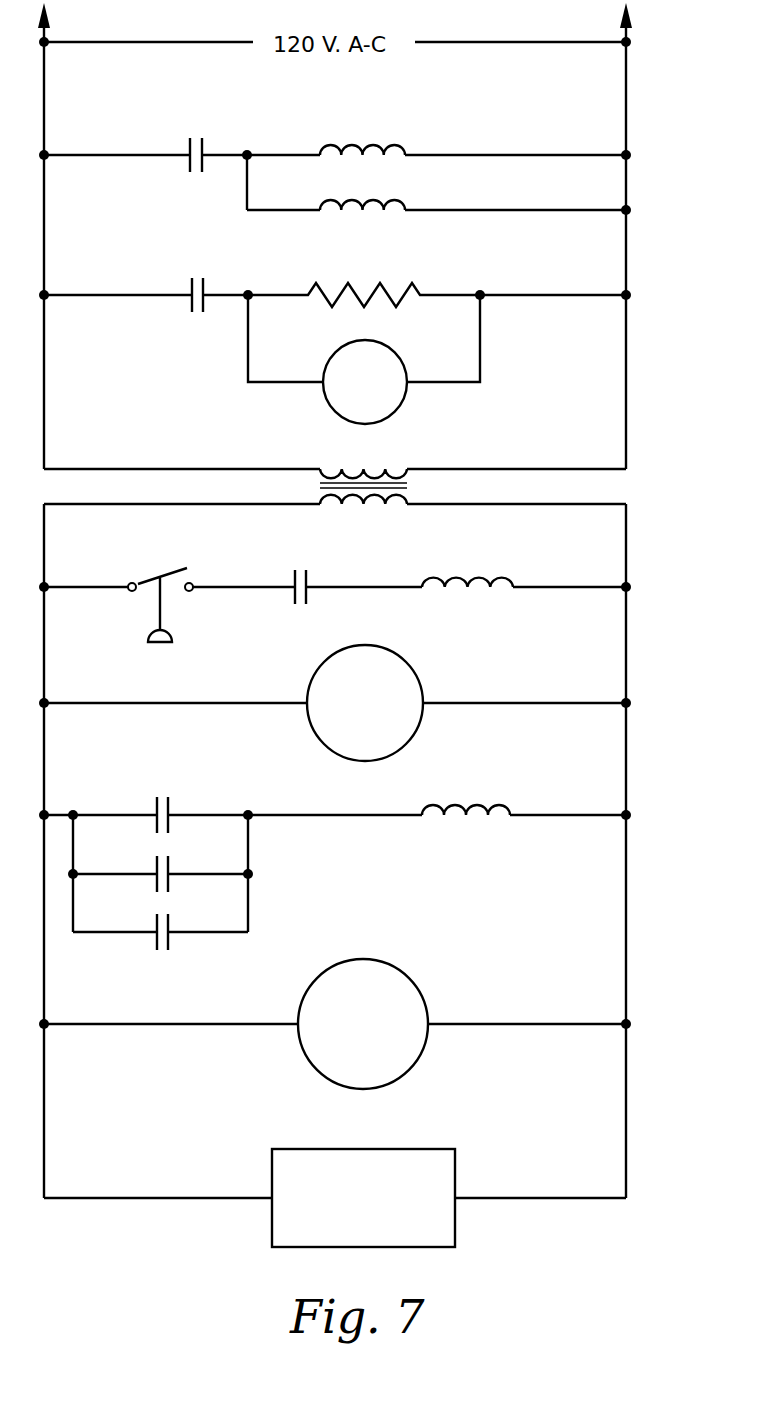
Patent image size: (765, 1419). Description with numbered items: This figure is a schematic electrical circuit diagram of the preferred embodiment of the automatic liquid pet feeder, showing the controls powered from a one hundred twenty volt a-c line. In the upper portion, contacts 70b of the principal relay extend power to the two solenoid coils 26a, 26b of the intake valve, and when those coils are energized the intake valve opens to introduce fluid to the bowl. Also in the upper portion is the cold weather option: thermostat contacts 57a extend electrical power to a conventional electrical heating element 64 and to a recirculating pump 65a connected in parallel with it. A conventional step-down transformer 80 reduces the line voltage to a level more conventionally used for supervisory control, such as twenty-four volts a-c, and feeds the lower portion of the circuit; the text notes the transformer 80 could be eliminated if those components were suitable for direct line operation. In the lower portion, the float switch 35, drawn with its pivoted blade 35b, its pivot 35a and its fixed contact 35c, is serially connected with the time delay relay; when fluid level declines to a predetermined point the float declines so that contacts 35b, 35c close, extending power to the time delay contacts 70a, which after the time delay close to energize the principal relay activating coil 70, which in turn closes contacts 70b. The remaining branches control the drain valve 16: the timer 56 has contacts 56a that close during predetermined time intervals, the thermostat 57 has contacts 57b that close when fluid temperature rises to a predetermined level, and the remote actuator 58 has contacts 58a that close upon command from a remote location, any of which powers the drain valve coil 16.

The drain valve 16 is at (506, 816).
The solenoid coil 26a is at (400, 154).
The solenoid coil 26b is at (400, 209).
The float switch 35 is at (151, 603).
The float switch element 35a is at (174, 634).
The float switch contact 35b is at (162, 571).
The float switch contact 35c is at (191, 593).
The timer 56 is at (420, 676).
The timer contacts 56a is at (162, 796).
The thermostat 57 is at (424, 992).
The thermostat contacts 57a is at (196, 277).
The thermostat contacts 57b is at (163, 866).
The remote actuator 58 is at (421, 1148).
The remote actuator contacts 58a is at (162, 924).
The electrical heating element 64 is at (373, 293).
The recirculating pump 65a is at (400, 404).
The time delay relay coil 70 is at (507, 586).
The time delay relay contacts 70a is at (302, 570).
The relay contacts 70b is at (196, 136).
The step-down transformer 80 is at (306, 480).